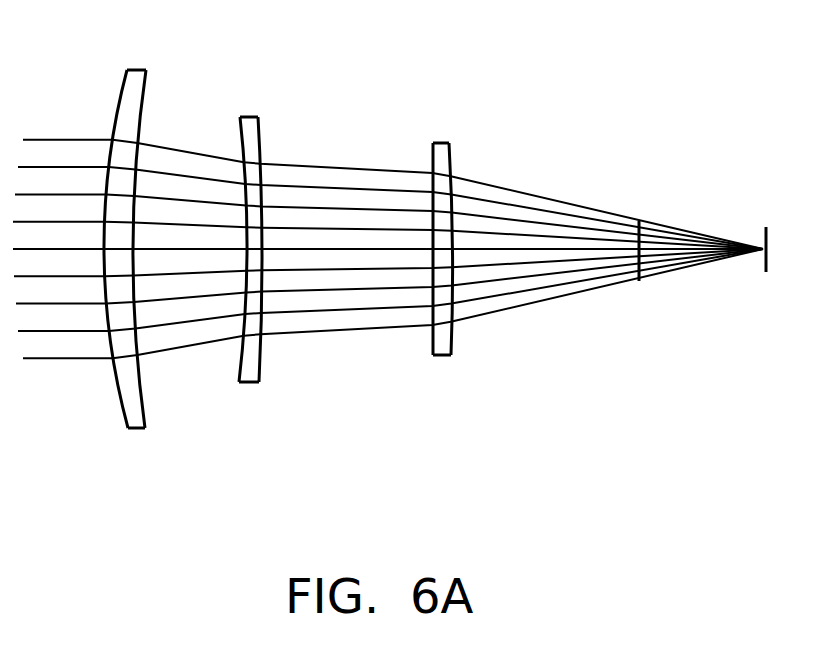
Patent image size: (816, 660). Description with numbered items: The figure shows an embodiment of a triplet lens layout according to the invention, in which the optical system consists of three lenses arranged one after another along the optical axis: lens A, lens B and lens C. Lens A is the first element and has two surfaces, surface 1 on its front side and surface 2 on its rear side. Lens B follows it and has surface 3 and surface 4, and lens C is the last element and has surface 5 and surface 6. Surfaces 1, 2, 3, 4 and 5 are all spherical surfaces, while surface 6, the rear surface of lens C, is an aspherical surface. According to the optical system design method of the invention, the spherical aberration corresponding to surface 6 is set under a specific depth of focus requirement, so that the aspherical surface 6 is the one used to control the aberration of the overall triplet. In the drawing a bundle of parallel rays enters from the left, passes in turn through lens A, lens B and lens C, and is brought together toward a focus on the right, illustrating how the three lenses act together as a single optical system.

The surface 1 is at (118, 90).
The surface 2 is at (147, 90).
The surface 3 is at (238, 136).
The surface 4 is at (260, 136).
The surface 5 is at (430, 157).
The surface 6 is at (452, 157).
The lens A is at (131, 267).
The lens B is at (250, 262).
The lens C is at (441, 260).